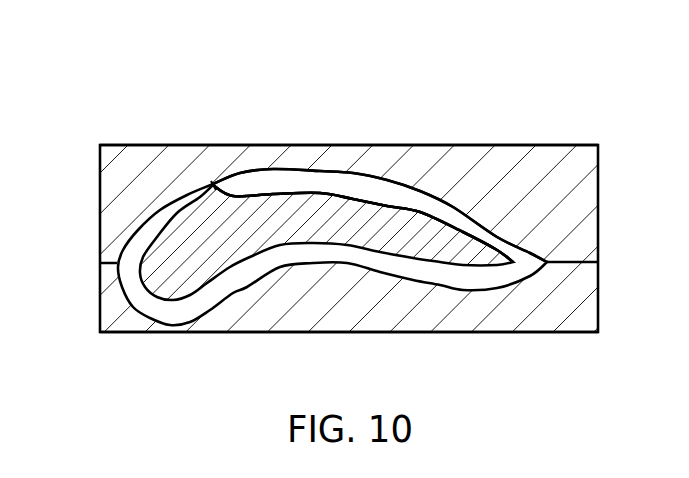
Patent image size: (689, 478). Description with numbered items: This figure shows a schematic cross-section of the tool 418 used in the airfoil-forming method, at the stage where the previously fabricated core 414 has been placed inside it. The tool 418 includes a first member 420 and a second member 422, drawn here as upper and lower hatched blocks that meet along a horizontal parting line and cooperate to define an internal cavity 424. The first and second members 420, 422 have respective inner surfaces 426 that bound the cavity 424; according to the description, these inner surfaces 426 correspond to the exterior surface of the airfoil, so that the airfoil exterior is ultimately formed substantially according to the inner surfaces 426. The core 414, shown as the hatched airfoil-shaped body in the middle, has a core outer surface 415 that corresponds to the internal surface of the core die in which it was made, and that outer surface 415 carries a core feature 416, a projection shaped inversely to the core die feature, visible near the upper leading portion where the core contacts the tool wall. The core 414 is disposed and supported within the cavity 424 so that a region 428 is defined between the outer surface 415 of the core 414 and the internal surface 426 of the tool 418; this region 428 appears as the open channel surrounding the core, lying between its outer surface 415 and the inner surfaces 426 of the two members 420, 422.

The core 414 is at (273, 237).
The core outer surface 415 is at (442, 222).
The core feature 416 is at (215, 189).
The tool 418 is at (88, 203).
The first member 420 is at (592, 177).
The second member 422 is at (592, 303).
The internal cavity 424 is at (388, 202).
The inner surfaces 426 is at (320, 175).
The region 428 is at (304, 189).